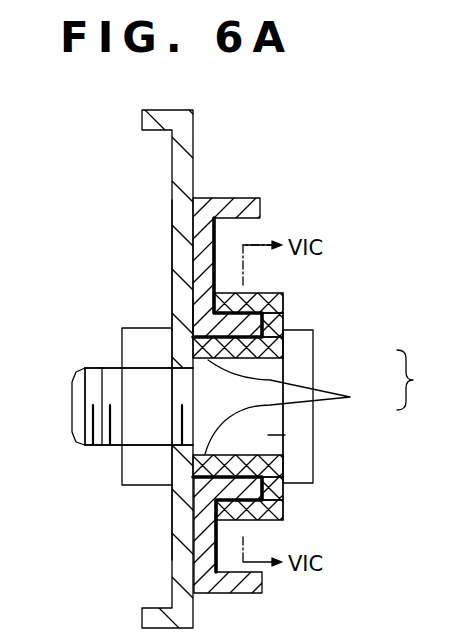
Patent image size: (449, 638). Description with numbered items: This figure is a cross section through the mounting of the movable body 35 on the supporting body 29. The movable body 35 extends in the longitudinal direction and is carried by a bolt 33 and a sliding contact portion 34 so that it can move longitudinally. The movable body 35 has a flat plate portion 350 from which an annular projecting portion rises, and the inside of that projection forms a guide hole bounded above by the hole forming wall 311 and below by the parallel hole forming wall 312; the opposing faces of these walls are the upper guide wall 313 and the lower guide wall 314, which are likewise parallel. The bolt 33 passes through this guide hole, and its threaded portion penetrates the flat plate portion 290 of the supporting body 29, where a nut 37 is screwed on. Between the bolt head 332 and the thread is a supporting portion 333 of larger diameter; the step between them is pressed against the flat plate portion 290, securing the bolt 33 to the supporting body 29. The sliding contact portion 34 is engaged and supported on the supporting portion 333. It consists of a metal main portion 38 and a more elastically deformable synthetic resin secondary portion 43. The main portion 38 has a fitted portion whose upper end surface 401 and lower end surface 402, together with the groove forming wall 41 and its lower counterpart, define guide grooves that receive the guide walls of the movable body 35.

The supporting body 29 is at (142, 118).
The flat plate portion 290 is at (172, 236).
The upper end surface 401 is at (214, 322).
The bolt 33 is at (85, 368).
The hole forming wall 311 is at (283, 304).
The nut 37 is at (137, 485).
The lower end surface 402 is at (173, 497).
The movable body 35 is at (260, 208).
The flat plate portion 350 is at (214, 232).
The groove forming wall 41 is at (263, 293).
The guide wall 313 is at (283, 324).
The main portion 38 is at (283, 348).
The secondary portion 43 is at (295, 407).
The sliding contact portion 34 is at (365, 406).
The bolt head 332 is at (300, 425).
The supporting portion 333 is at (285, 435).
The guide wall 314 is at (280, 486).
The hole forming wall 312 is at (270, 509).